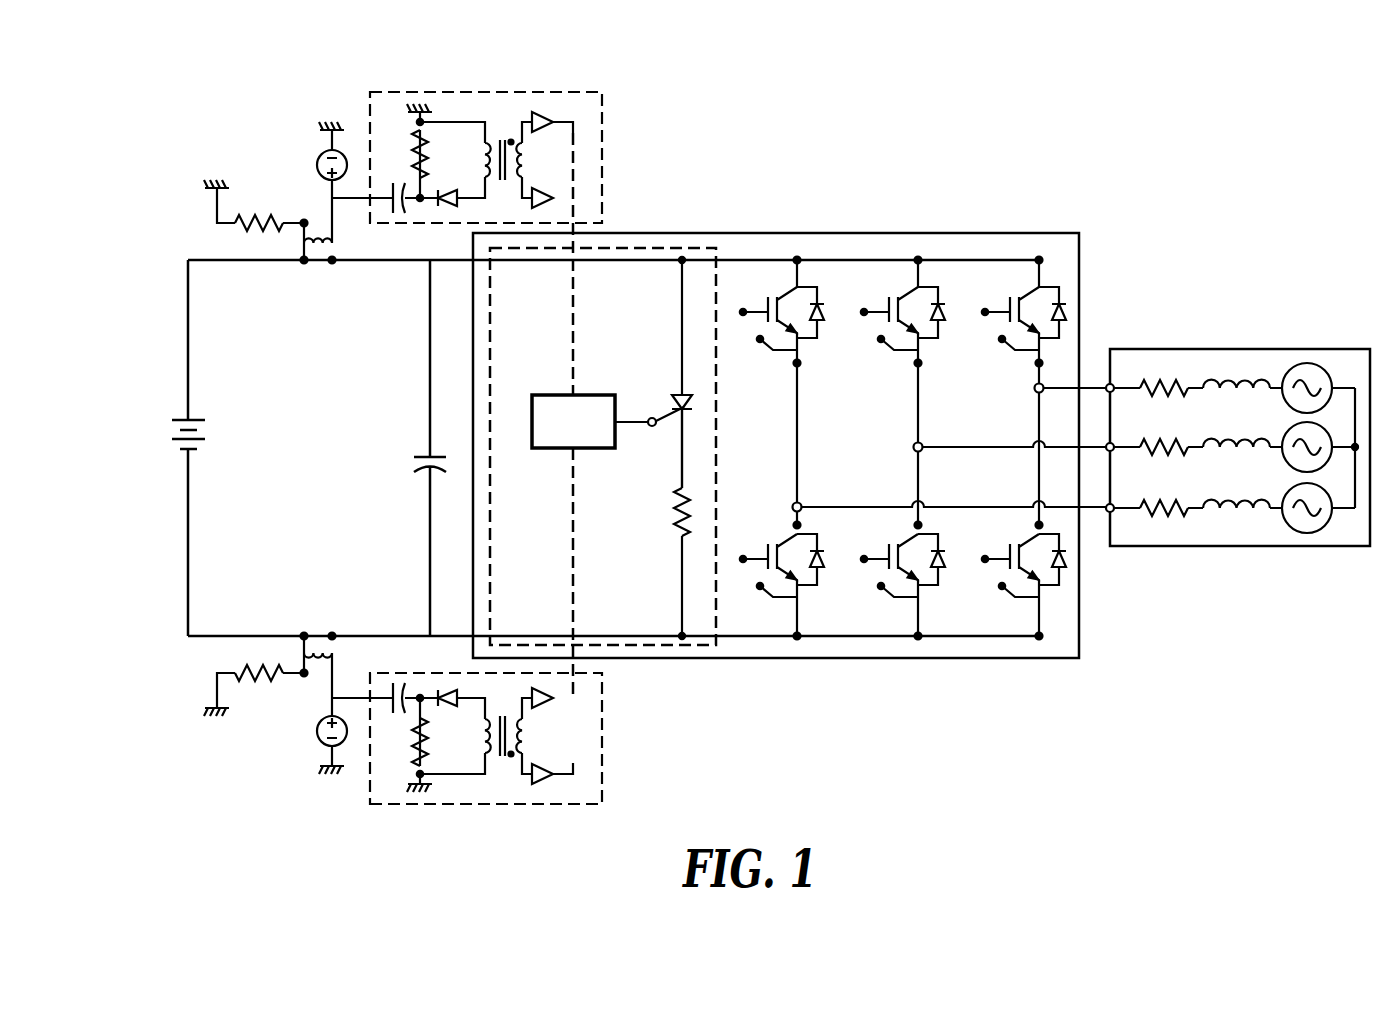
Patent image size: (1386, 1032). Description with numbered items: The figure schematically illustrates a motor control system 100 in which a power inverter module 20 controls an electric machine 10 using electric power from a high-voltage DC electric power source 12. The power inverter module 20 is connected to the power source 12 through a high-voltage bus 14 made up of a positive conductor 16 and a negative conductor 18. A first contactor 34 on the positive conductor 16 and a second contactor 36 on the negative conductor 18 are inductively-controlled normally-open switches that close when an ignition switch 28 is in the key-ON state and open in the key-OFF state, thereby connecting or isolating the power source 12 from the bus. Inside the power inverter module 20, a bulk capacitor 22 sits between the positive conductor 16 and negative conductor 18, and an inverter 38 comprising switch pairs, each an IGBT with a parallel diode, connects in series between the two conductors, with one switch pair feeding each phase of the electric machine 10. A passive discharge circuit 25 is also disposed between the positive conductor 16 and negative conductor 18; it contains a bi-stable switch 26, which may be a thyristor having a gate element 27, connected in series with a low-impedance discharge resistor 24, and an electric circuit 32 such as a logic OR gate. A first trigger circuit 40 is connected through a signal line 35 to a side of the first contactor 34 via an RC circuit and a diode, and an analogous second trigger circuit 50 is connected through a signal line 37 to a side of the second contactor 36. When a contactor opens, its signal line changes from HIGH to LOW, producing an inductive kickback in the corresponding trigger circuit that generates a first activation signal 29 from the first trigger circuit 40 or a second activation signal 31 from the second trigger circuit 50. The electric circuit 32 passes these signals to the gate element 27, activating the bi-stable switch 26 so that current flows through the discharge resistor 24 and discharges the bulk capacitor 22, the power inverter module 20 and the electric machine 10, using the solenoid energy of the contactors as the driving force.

The motor control system 100 is at (170, 132).
The electric machine 10 is at (1245, 348).
The high-voltage DC electric power source 12 is at (182, 432).
The high-voltage bus 14 is at (182, 264).
The positive conductor 16 is at (205, 258).
The negative conductor 18 is at (203, 639).
The power inverter module 20 is at (940, 222).
The bulk capacitor 22 is at (418, 461).
The low-impedance discharge resistor 24 is at (676, 505).
The passive discharge circuit 25 is at (724, 248).
The bi-stable switch 26 is at (690, 405).
The gate element 27 is at (686, 448).
The ignition switch 28 is at (317, 163).
The first activation signal 29 is at (578, 246).
The second activation signal 31 is at (578, 658).
The electric circuit 32 is at (585, 394).
The first contactor 34 is at (317, 282).
The signal line 35 is at (353, 197).
The second contactor 36 is at (317, 615).
The signal line 37 is at (353, 699).
The inverter 38 is at (858, 249).
The first trigger circuit 40 is at (604, 122).
The second trigger circuit 50 is at (604, 775).